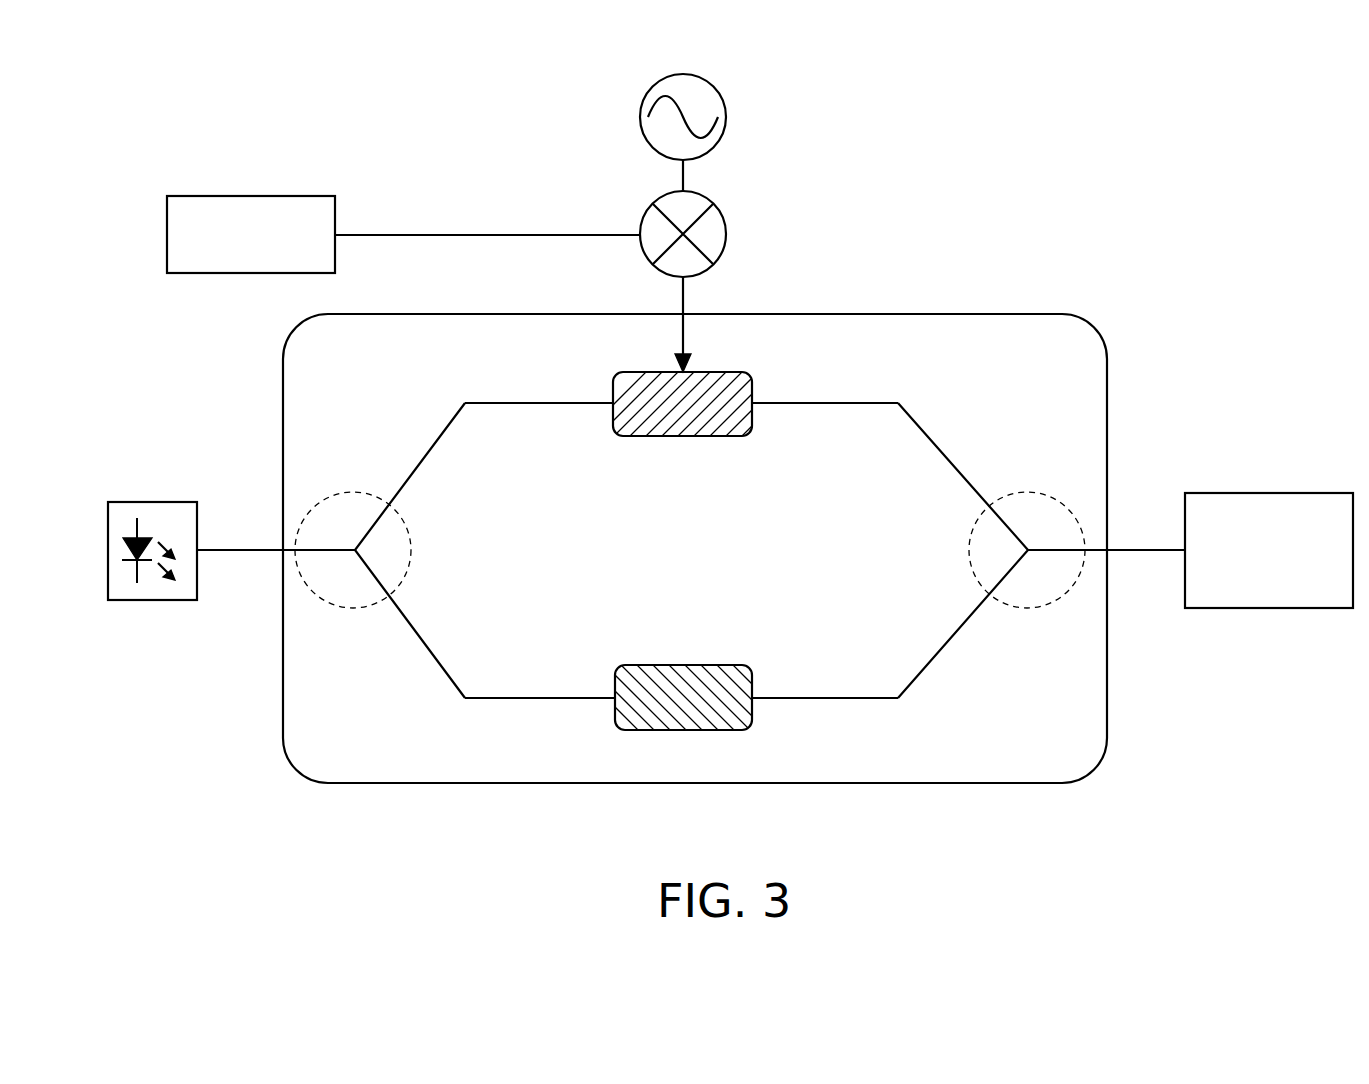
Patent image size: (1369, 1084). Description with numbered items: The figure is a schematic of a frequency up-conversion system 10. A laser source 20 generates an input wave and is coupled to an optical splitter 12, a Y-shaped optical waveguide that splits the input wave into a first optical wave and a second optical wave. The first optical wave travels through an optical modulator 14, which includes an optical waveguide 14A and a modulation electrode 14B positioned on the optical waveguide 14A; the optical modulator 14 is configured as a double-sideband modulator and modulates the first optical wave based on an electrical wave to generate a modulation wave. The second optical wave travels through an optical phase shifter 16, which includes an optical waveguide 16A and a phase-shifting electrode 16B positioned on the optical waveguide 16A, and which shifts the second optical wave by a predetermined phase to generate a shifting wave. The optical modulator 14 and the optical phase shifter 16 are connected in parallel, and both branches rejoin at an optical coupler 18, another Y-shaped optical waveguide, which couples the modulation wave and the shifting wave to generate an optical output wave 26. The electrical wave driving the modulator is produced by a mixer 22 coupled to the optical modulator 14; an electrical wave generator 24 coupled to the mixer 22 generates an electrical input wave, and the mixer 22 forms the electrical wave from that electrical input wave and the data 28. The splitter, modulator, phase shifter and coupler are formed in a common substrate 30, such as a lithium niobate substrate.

The frequency up-conversion system 10 is at (1102, 152).
The optical splitter 12 is at (305, 515).
The optical modulator 14 is at (681, 335).
The optical waveguide 14A is at (833, 403).
The modulation electrode 14B is at (688, 361).
The optical phase shifter 16 is at (681, 776).
The optical waveguide 16A is at (558, 698).
The phase-shifting electrode 16B is at (622, 730).
The optical coupler 18 is at (1082, 520).
The laser source 20 is at (152, 502).
The mixer 22 is at (655, 203).
The electrical wave generator 24 is at (727, 117).
The optical output wave 26 is at (1268, 493).
The data 28 is at (250, 196).
The Mach-Zehnder modulator substrate 30 is at (1092, 365).